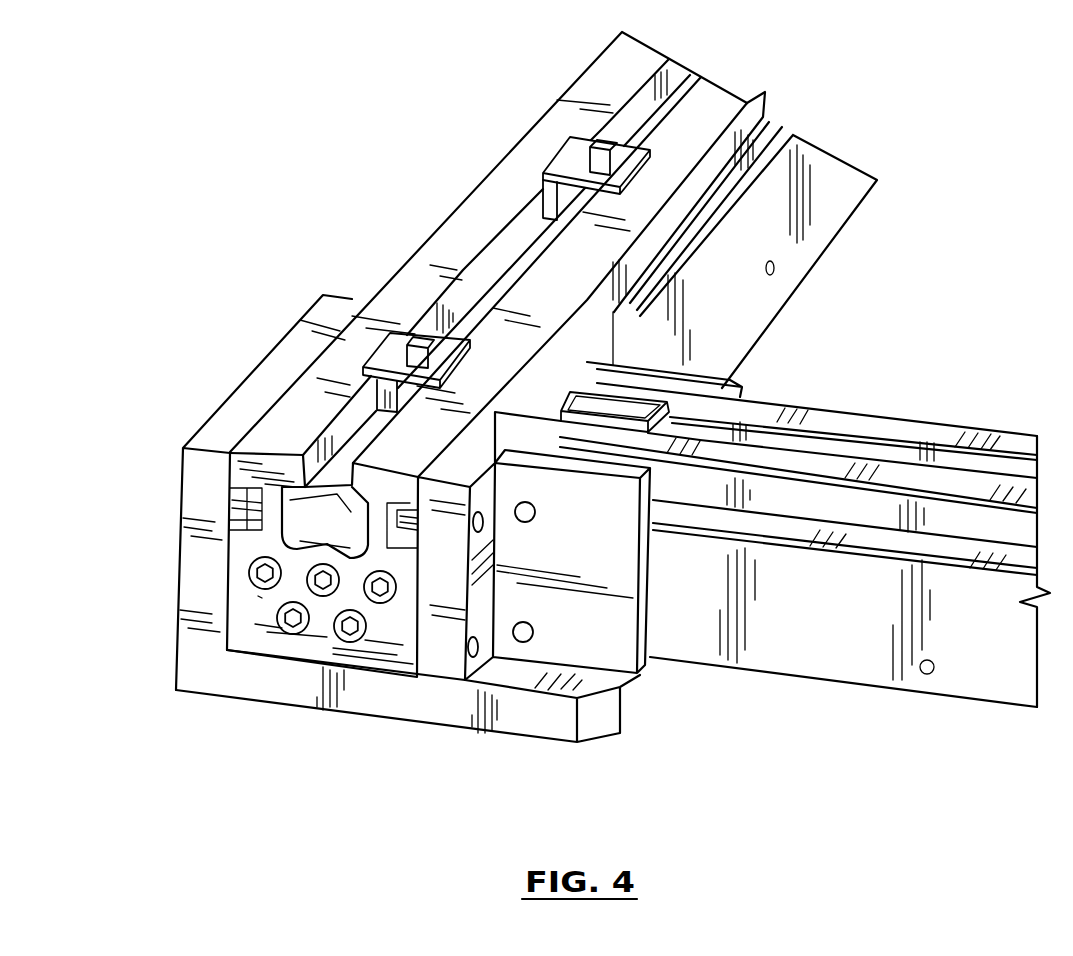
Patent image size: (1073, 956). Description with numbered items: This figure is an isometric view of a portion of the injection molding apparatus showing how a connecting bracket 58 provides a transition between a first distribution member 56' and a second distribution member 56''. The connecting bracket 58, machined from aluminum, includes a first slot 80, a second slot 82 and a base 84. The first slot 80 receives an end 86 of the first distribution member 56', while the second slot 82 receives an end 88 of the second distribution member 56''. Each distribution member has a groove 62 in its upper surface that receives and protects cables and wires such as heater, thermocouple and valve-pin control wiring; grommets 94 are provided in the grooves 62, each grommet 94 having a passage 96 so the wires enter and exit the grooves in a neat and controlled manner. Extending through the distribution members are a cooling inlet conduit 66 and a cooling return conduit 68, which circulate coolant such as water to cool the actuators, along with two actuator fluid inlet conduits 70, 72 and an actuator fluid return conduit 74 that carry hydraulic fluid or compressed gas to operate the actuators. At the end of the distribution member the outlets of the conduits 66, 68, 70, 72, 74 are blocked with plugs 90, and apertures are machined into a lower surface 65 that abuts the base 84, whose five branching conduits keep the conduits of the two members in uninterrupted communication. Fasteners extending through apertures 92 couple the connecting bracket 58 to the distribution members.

The first distribution member 56' is at (488, 243).
The second distribution member 56'' is at (772, 602).
The connecting bracket 58 is at (180, 481).
The groove 62 is at (661, 113).
The lower surface 65 is at (773, 293).
The cooling inlet conduit 66 is at (285, 636).
The cooling return conduit 68 is at (354, 643).
The actuator fluid inlet conduit 70 is at (262, 598).
The actuator fluid inlet conduit 72 is at (388, 603).
The actuator fluid return conduit 74 is at (327, 598).
The first slot 80 is at (291, 437).
The second slot 82 is at (675, 397).
The base 84 is at (541, 725).
The end 86 is at (257, 407).
The end 88 is at (630, 387).
The plug 90 is at (250, 570).
The aperture 92 is at (535, 513).
The grommet 94 is at (543, 172).
The passage 96 is at (590, 160).